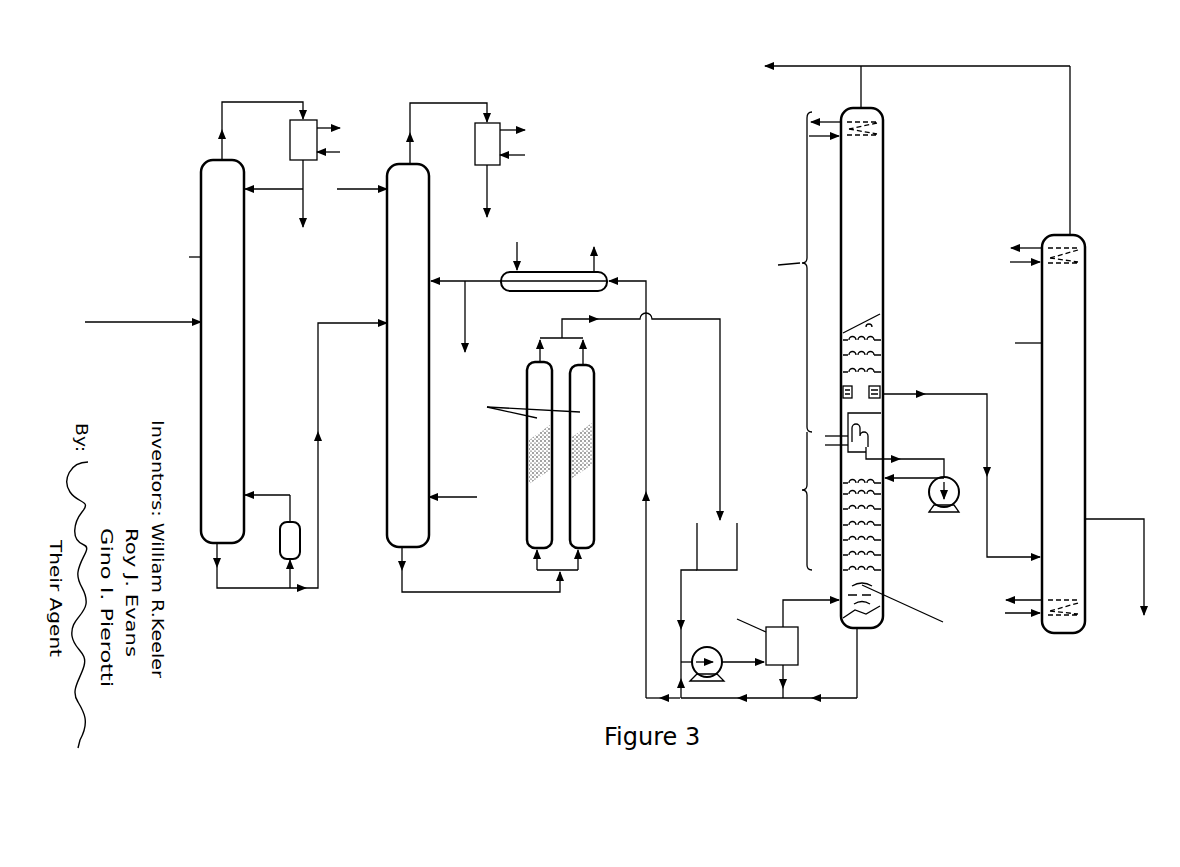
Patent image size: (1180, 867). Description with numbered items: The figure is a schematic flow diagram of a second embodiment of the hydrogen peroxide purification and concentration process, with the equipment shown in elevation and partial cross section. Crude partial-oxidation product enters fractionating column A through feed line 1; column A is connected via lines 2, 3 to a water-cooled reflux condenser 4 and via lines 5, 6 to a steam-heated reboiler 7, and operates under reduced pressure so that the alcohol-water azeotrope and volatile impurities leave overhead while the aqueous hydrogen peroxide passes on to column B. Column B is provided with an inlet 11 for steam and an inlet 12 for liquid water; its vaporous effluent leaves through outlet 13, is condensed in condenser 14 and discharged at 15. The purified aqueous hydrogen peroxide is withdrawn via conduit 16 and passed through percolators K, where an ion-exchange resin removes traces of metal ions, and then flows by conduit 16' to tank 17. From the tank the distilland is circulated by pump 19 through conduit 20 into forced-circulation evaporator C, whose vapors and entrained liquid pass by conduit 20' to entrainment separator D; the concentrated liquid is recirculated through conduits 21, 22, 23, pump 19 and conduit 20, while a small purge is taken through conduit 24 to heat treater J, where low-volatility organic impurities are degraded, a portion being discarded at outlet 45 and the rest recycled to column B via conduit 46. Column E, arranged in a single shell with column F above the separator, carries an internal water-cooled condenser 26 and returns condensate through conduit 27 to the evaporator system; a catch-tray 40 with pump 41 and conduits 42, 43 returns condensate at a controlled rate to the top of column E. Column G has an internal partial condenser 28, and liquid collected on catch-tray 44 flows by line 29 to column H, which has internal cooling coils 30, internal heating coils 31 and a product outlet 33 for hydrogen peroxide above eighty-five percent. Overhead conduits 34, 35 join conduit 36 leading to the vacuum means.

The feed line 1 is at (165, 322).
The line 2 is at (250, 103).
The line 3 is at (289, 190).
The water-cooled reflux condenser 4 is at (290, 128).
The line 5 is at (262, 588).
The line 6 is at (257, 495).
The steam-heated reboiler 7 is at (280, 531).
The inlet for steam 11 is at (447, 497).
The inlet for liquid water 12 is at (351, 189).
The outlet 13 is at (434, 104).
The condenser 14 is at (475, 134).
The discharge 15 is at (489, 197).
The conduit 16 is at (490, 569).
The conduit 16' is at (630, 407).
The tank 17 is at (714, 533).
The pump 19 is at (704, 649).
The conduit 20 is at (742, 644).
The conduit 20' is at (811, 603).
The conduit 21 is at (786, 683).
The conduit 22 is at (770, 701).
The conduit 23 is at (682, 690).
The conduit 24 is at (640, 685).
The internal water-cooled condenser 26 is at (850, 432).
The conduit 27 is at (857, 684).
The internal partial condenser 28 is at (858, 118).
The line 29 is at (988, 548).
The internal cooling coils 30 is at (1066, 248).
The internal heating coils 31 is at (1083, 621).
The outlet 33 is at (1124, 508).
The overhead conduit 34 is at (866, 88).
The overhead conduit 35 is at (1071, 97).
The conduit 36 is at (806, 66).
The catch-tray 40 is at (882, 437).
The pump 41 is at (951, 498).
The conduit 42 is at (917, 457).
The conduit 43 is at (893, 478).
The catch-tray 44 is at (484, 273).
The outlet 45 is at (466, 309).
The conduit 46 is at (452, 277).